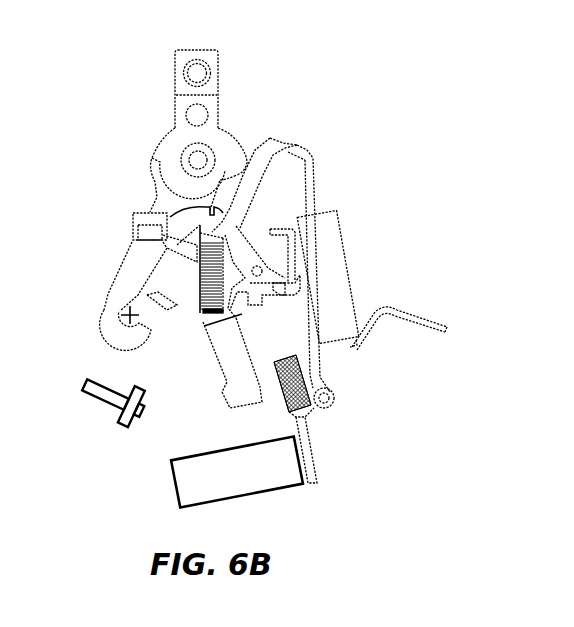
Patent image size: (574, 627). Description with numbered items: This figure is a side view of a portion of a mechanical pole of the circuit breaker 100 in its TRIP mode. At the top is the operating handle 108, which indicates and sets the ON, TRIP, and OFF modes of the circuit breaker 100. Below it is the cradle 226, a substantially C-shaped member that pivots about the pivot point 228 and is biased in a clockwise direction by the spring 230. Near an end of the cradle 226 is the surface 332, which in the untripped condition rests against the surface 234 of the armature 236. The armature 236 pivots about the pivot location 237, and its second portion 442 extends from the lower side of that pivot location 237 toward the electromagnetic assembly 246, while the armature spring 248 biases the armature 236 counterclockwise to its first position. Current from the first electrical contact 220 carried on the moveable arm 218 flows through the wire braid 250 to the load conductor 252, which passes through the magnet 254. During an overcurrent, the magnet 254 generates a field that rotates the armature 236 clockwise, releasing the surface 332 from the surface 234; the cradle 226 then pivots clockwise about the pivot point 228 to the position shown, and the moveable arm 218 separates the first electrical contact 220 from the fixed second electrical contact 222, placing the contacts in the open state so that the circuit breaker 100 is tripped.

The circuit breaker 100 is at (291, 51).
The operating handle 108 is at (177, 72).
The wire braid 250 is at (283, 128).
The load conductor 252 is at (313, 162).
The surface of the armature 234 is at (280, 224).
The magnet 254 is at (345, 258).
The cradle 226 is at (130, 262).
The pivot point 228 is at (127, 311).
The spring 230 is at (200, 312).
The surface of the cradle 332 is at (283, 285).
The moveable arm 218 is at (220, 362).
The first electrical contact 220 is at (233, 400).
The armature spring 248 is at (302, 382).
The pivot location 237 is at (334, 400).
The armature 236 is at (300, 425).
The second portion 442 is at (312, 452).
The second electrical contact 222 is at (135, 422).
The electromagnetic assembly 246 is at (170, 488).